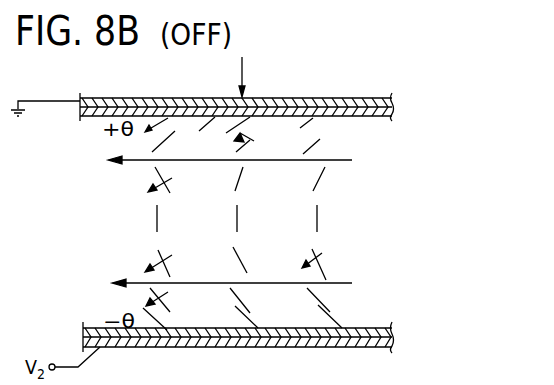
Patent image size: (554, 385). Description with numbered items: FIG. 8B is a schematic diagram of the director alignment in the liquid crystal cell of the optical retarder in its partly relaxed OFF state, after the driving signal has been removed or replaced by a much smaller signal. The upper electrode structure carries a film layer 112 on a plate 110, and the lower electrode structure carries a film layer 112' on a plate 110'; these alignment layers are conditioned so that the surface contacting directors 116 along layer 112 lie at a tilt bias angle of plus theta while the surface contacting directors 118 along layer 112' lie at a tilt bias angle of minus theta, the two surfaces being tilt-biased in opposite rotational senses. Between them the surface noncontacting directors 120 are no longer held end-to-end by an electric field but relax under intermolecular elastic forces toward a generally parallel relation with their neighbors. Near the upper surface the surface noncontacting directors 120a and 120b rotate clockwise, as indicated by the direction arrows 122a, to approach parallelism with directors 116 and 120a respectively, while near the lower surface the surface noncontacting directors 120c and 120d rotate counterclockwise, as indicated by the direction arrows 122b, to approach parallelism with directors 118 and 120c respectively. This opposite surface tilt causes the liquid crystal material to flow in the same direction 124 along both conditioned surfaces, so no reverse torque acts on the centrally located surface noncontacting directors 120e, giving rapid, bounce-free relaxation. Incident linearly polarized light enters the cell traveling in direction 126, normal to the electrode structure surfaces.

The first plate electrode 110 is at (211, 93).
The film layer 112 is at (47, 122).
The surface contacting directors 116 is at (212, 100).
The direction of light propagation 126 is at (243, 68).
The surface noncontacting directors 120a is at (166, 148).
The direction arrows 122a is at (252, 144).
The direction of liquid crystal material flow 124 is at (352, 160).
The surface noncontacting directors 120b is at (242, 184).
The surface noncontacting directors 120 is at (154, 218).
The centrally located surface noncontacting directors 120e is at (159, 226).
The direction arrows 122b is at (173, 260).
The surface noncontacting directors 120d is at (243, 262).
The surface noncontacting directors 120c is at (240, 300).
The surface contacting directors 118 is at (150, 318).
The second plate electrode 110' is at (212, 336).
The film layer 112' is at (67, 304).